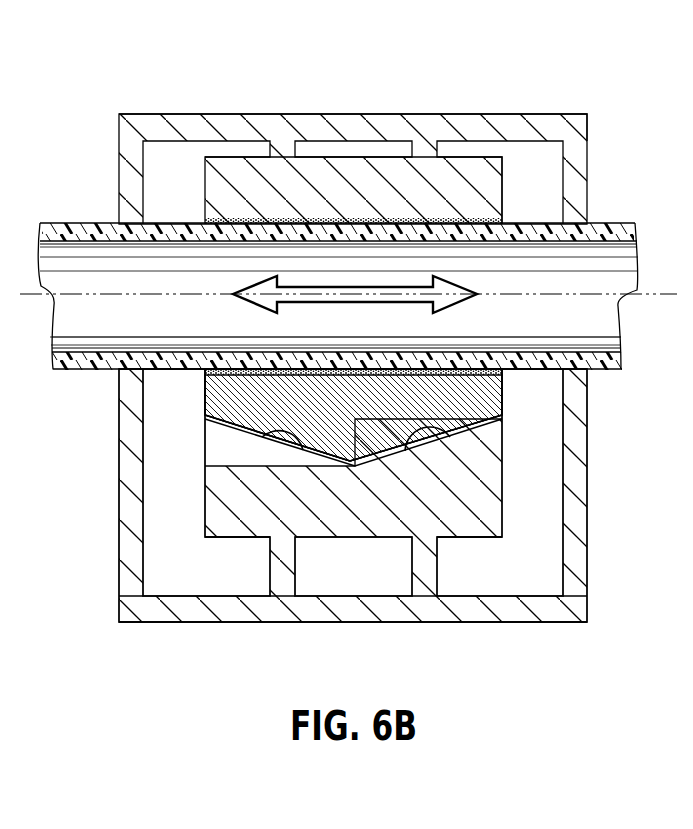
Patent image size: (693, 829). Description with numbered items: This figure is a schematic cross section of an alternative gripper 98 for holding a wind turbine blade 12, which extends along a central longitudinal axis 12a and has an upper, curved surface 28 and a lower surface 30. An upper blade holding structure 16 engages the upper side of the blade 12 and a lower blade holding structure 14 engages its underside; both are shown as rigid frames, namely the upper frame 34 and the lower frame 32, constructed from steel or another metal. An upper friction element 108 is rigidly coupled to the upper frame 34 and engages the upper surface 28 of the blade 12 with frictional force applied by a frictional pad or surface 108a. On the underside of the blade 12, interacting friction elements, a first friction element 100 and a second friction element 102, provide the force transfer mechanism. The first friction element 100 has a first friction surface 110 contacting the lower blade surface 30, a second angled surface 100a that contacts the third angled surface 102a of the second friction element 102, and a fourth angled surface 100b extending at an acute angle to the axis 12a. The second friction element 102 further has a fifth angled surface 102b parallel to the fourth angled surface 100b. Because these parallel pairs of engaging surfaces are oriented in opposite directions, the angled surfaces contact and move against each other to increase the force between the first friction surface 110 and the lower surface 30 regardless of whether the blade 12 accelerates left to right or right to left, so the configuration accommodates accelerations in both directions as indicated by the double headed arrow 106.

The gripper 98 is at (554, 93).
The upper blade holding structure 16 is at (464, 114).
The lower blade holding structure 14 is at (553, 622).
The upper frame 34 is at (384, 114).
The lower frame 32 is at (434, 614).
The upper surface of the blade 28 is at (633, 223).
The lower surface of the blade 30 is at (92, 374).
The wind turbine blade 12 is at (338, 304).
The central longitudinal axis 12a is at (670, 293).
The first friction surface 110 is at (477, 350).
The double headed arrow 106 is at (259, 300).
The upper friction element 108 is at (214, 189).
The frictional pad 108a is at (214, 226).
The first friction element 100 is at (214, 402).
The second angled surface 100a is at (258, 428).
The fourth angled surface 100b is at (462, 428).
The second friction element 102 is at (468, 525).
The third angled surface 102a is at (296, 435).
The fifth angled surface 102b is at (434, 426).